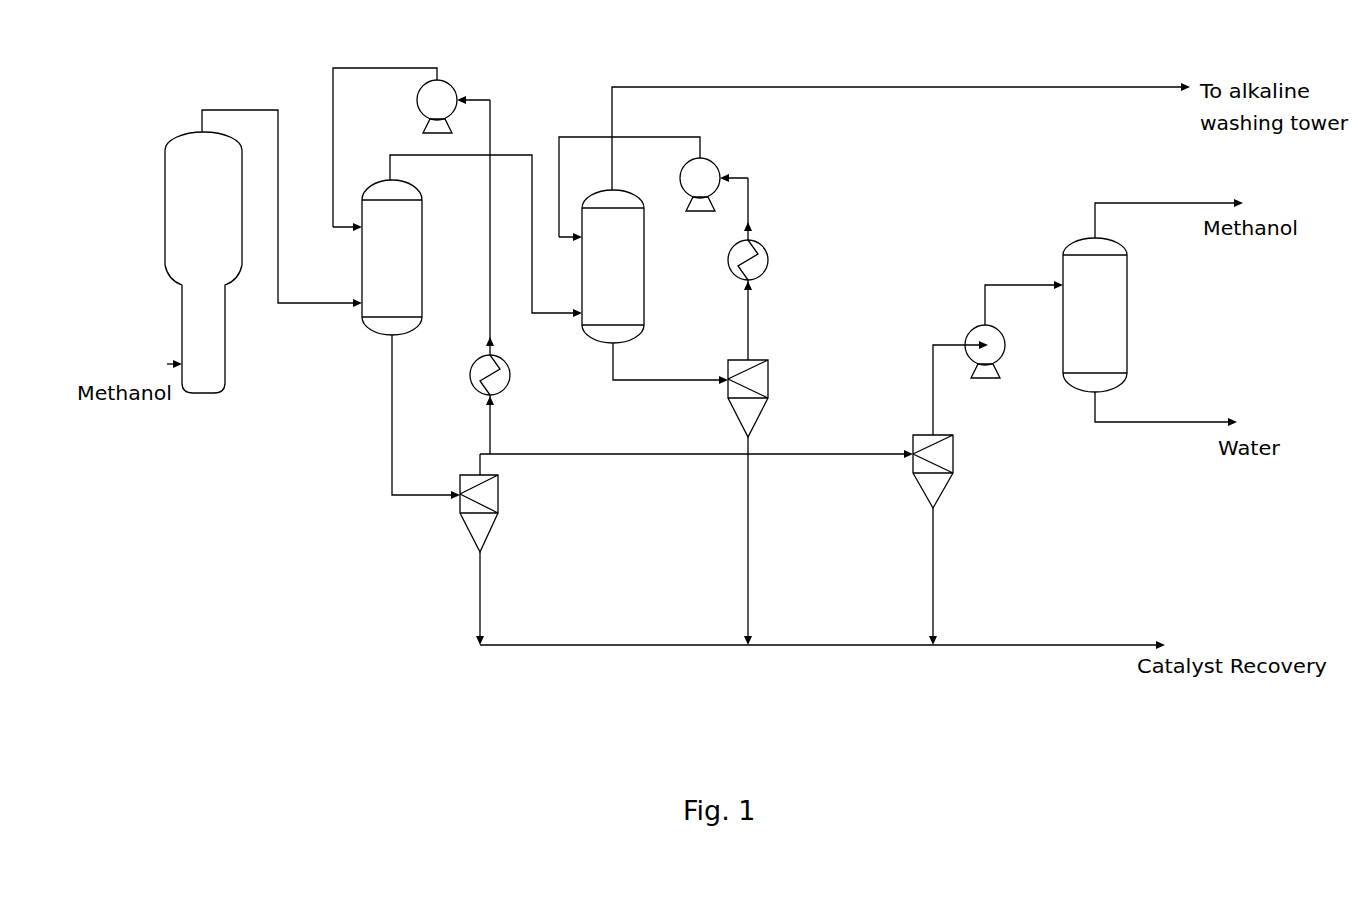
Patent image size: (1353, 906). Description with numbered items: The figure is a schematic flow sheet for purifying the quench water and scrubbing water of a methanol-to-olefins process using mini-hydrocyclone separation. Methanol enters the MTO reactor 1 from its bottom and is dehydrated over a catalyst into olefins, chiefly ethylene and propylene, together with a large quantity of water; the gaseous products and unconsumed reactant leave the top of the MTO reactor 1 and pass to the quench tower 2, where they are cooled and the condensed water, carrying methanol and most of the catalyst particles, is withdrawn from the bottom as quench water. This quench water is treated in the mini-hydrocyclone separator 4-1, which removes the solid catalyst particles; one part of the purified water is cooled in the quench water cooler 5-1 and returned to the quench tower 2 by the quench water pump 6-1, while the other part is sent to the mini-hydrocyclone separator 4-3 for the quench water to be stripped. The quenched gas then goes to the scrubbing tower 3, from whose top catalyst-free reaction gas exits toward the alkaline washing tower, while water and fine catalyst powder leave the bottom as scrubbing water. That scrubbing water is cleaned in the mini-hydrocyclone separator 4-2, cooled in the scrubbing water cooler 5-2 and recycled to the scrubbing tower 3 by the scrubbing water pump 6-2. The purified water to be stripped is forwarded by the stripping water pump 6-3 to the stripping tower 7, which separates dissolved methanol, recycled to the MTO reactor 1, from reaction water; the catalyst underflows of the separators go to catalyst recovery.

The MTO reactor 1 is at (203, 262).
The quench tower 2 is at (392, 257).
The scrubbing tower 3 is at (613, 266).
The mini-hydrocyclone separator 4-1 is at (503, 513).
The mini-hydrocyclone separator for the scrubbing water 4-2 is at (772, 398).
The mini-hydrocyclone separator for the quench water to be stripped 4-3 is at (957, 471).
The quench water cooler 5-1 is at (514, 375).
The scrubbing water cooler 5-2 is at (772, 260).
The quench water pump 6-1 is at (457, 102).
The scrubbing water pump 6-2 is at (719, 176).
The stripping water pump 6-3 is at (1000, 341).
The stripping tower 7 is at (1095, 315).